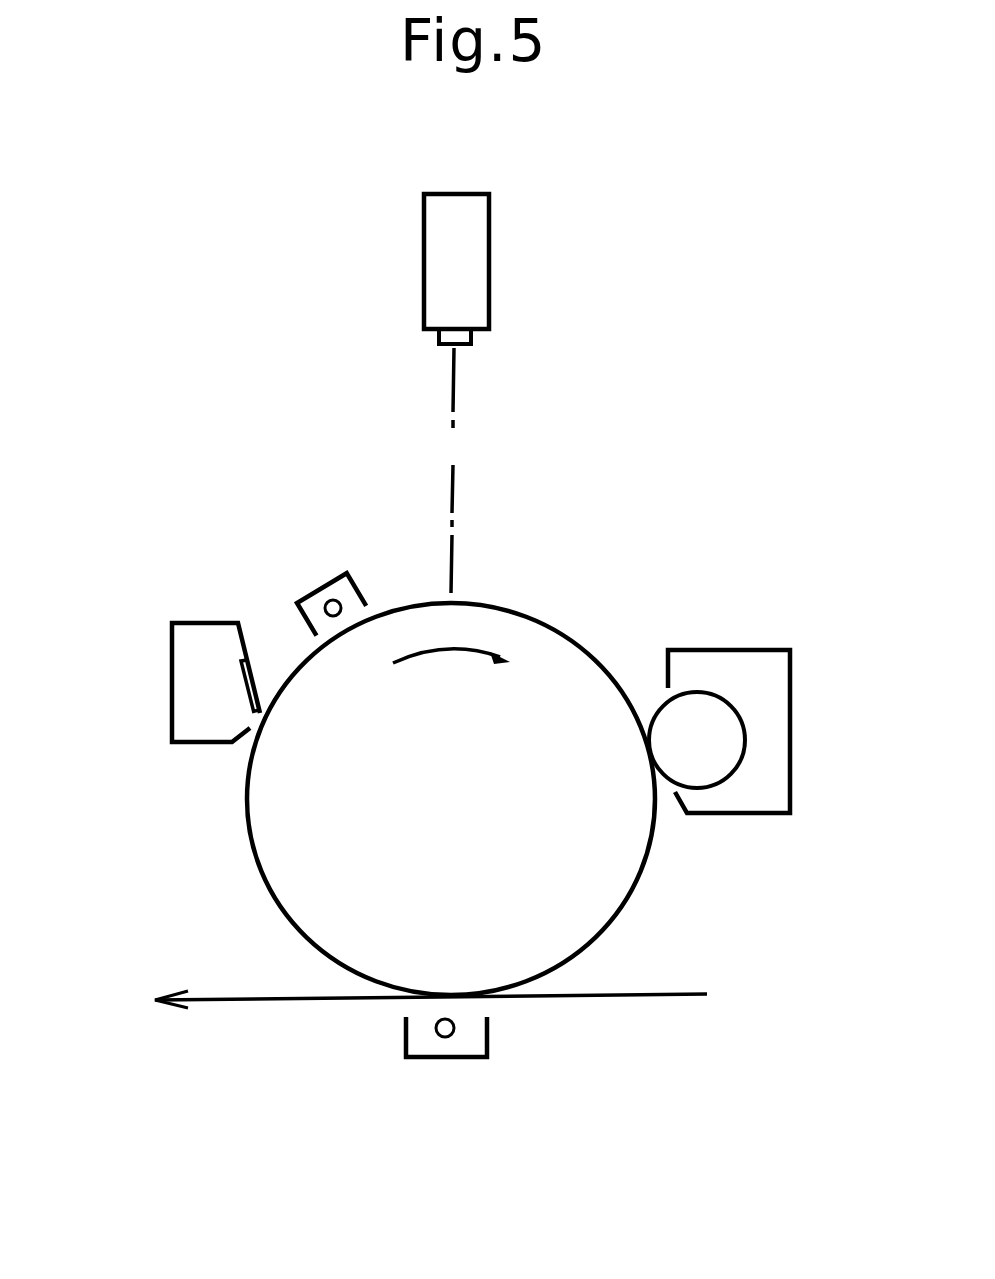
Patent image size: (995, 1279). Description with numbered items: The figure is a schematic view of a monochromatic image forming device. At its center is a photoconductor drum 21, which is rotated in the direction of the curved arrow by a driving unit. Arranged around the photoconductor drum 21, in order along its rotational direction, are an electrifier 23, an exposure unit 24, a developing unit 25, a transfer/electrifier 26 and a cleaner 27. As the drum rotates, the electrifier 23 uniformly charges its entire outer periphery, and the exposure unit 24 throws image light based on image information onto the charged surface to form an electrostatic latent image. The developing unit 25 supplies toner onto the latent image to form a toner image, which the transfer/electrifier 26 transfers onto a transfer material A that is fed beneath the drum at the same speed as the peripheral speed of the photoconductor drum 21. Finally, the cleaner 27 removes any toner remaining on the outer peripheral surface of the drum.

The photoconductor drum 21 is at (283, 833).
The electrifier 23 is at (318, 585).
The exposure unit 24 is at (416, 241).
The developing unit 25 is at (790, 712).
The transfer/electrifier 26 is at (445, 1057).
The cleaner 27 is at (167, 680).
The transfer material A is at (240, 1000).